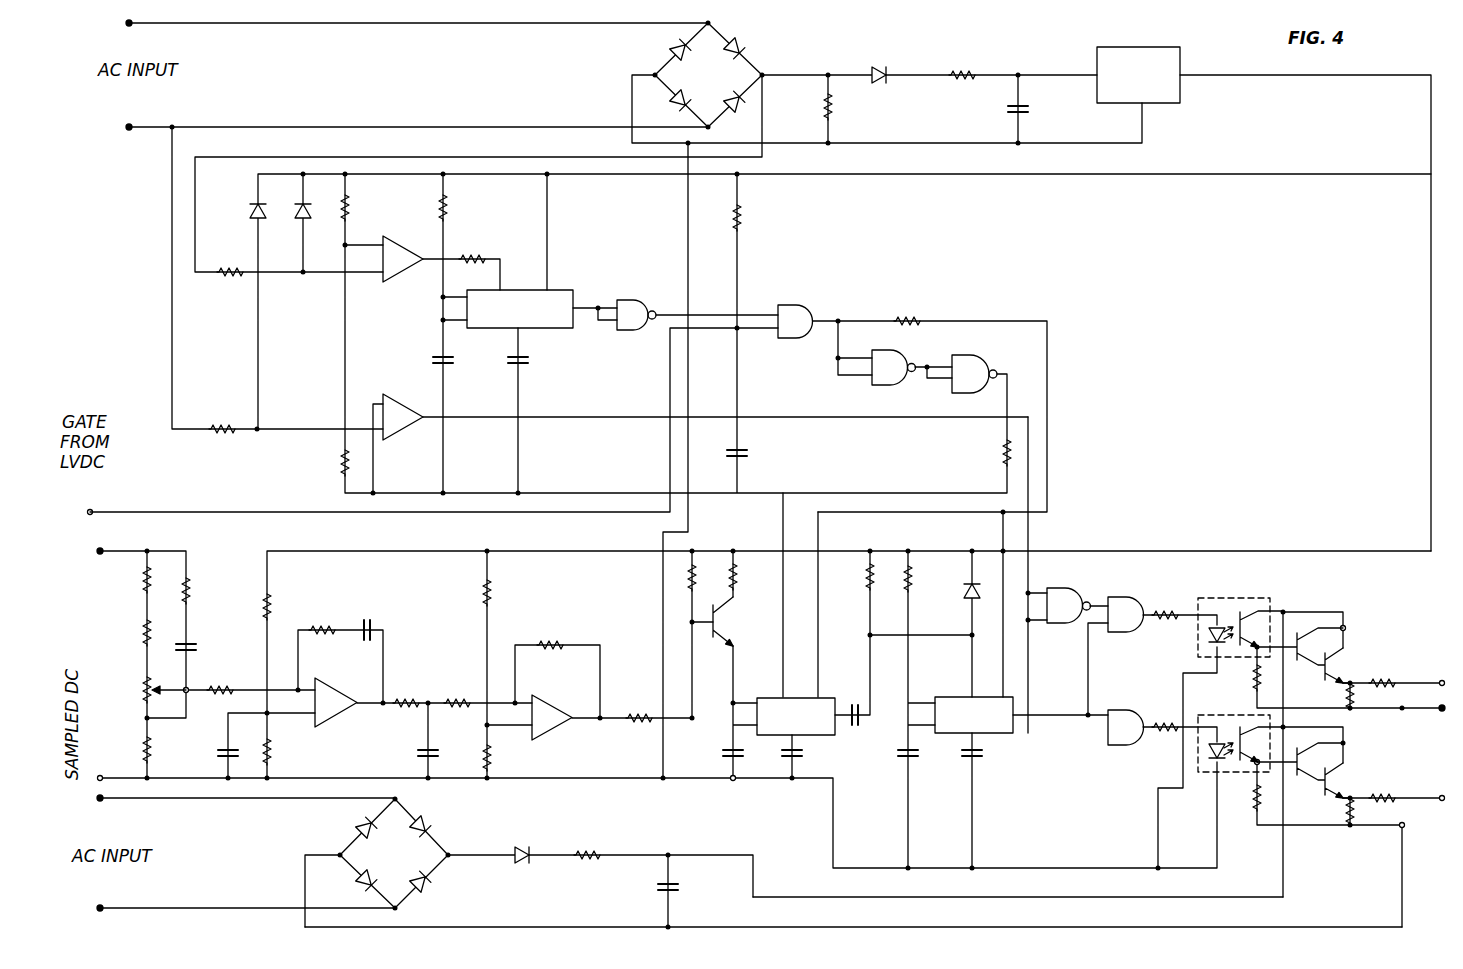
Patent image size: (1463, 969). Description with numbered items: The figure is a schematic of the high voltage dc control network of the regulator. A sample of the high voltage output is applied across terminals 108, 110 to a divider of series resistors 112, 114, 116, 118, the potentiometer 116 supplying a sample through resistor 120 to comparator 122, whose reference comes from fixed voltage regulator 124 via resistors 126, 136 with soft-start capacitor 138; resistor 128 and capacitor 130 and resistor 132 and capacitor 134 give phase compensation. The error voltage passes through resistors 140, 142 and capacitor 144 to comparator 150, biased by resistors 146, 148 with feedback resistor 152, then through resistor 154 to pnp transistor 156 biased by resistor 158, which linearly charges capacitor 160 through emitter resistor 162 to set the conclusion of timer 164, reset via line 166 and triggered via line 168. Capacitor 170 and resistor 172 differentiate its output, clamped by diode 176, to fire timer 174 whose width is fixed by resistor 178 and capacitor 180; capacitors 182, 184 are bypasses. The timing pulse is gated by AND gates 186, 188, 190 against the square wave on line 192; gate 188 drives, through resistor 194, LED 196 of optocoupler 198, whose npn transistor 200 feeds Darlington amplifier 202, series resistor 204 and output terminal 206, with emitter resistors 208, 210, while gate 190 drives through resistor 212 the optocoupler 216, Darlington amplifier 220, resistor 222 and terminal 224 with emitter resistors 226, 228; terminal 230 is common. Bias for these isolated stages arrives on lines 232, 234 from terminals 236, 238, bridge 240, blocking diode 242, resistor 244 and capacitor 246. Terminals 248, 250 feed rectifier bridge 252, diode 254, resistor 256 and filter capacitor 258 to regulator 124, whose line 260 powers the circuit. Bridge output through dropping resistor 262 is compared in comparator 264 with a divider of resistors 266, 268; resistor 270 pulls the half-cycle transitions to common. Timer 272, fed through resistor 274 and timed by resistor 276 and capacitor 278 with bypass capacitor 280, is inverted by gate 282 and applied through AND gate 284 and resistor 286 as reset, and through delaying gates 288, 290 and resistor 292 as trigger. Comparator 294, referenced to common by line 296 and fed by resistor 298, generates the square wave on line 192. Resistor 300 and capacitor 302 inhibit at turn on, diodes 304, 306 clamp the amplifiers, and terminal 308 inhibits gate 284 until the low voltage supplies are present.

The terminal 108 is at (101, 548).
The terminal 110 is at (101, 775).
The series resistor 112 is at (142, 585).
The series resistor 114 is at (142, 637).
The resistor 116 is at (142, 695).
The series resistor 118 is at (140, 750).
The resistor 120 is at (220, 681).
The comparator 122 is at (345, 673).
The fixed voltage regulator 124 is at (1150, 46).
The resistor 126 is at (272, 601).
The resistor 128 is at (190, 587).
The capacitor 130 is at (190, 643).
The resistor 132 is at (322, 622).
The capacitor 134 is at (372, 622).
The resistor 136 is at (273, 756).
The capacitor 138 is at (220, 755).
The series resistor 140 is at (406, 694).
The series resistor 142 is at (457, 694).
The capacitor 144 is at (418, 755).
The resistor 146 is at (490, 587).
The resistor 148 is at (493, 758).
The comparator 150 is at (553, 694).
The resistor 152 is at (550, 637).
The resistor 154 is at (637, 709).
The pnp transistor 156 is at (731, 630).
The resistor 158 is at (682, 578).
The capacitor 160 is at (723, 755).
The resistor 162 is at (739, 578).
The timer network 164 is at (765, 697).
The line 166 is at (820, 533).
The line 168 is at (781, 531).
The capacitor 170 is at (852, 705).
The resistor 172 is at (863, 584).
The timer network 174 is at (945, 696).
The diode 176 is at (965, 598).
The resistor 178 is at (915, 584).
The capacitor 180 is at (900, 760).
The capacitor 182 is at (800, 755).
The capacitor 184 is at (980, 757).
The AND gate 186 is at (1062, 625).
The AND gate 188 is at (1122, 634).
The AND gate 190 is at (1110, 747).
The line 192 is at (1032, 533).
The current limiting resistor 194 is at (1165, 624).
The LED 196 is at (1219, 622).
The optocoupler 198 is at (1195, 600).
The npn transistor 200 is at (1250, 612).
The Darlington amplifier 202 is at (1355, 645).
The series resistor 204 is at (1381, 675).
The output terminal 206 is at (1440, 680).
The emitter resistor 208 is at (1250, 683).
The emitter resistor 210 is at (1342, 698).
The current limiting resistor 212 is at (1163, 736).
The optocoupler 216 is at (1203, 798).
The Darlington amplifier 220 is at (1352, 760).
The series resistor 222 is at (1381, 790).
The output terminal 224 is at (1440, 795).
The emitter resistor 226 is at (1252, 810).
The emitter resistor 228 is at (1343, 813).
The common output terminal 230 is at (1440, 712).
The line 232 is at (950, 899).
The line 234 is at (1050, 926).
The terminal 236 is at (102, 801).
The terminal 238 is at (102, 905).
The bridge 240 is at (452, 819).
The blocking diode 242 is at (520, 864).
The current limiting resistor 244 is at (588, 847).
The capacitor 246 is at (678, 892).
The terminal 248 is at (131, 27).
The terminal 250 is at (127, 131).
The rectifier bridge 252 is at (646, 52).
The blocking diode 254 is at (878, 84).
The current limiting resistor 256 is at (962, 66).
The filter capacitor 258 is at (1028, 112).
The line 260 is at (1429, 262).
The series dropping resistor 262 is at (226, 283).
The comparator 264 is at (396, 284).
The resistor 266 is at (350, 206).
The resistor 268 is at (338, 466).
The resistor 270 is at (822, 108).
The timer 272 is at (558, 289).
The resistor 274 is at (470, 253).
The resistor 276 is at (450, 206).
The capacitor 278 is at (450, 364).
The bypass filter capacitor 280 is at (526, 364).
The AND gate and inverter 282 is at (630, 332).
The AND gate 284 is at (793, 303).
The resistor 286 is at (908, 312).
The AND circuit 288 is at (885, 386).
The AND gate 290 is at (975, 360).
The resistor 292 is at (1000, 455).
The comparator 294 is at (398, 393).
The line 296 is at (375, 470).
The resistor 298 is at (222, 421).
The resistor 300 is at (745, 219).
The capacitor 302 is at (745, 451).
The diode 304 is at (252, 214).
The diode 306 is at (300, 223).
The input terminal 308 is at (98, 501).